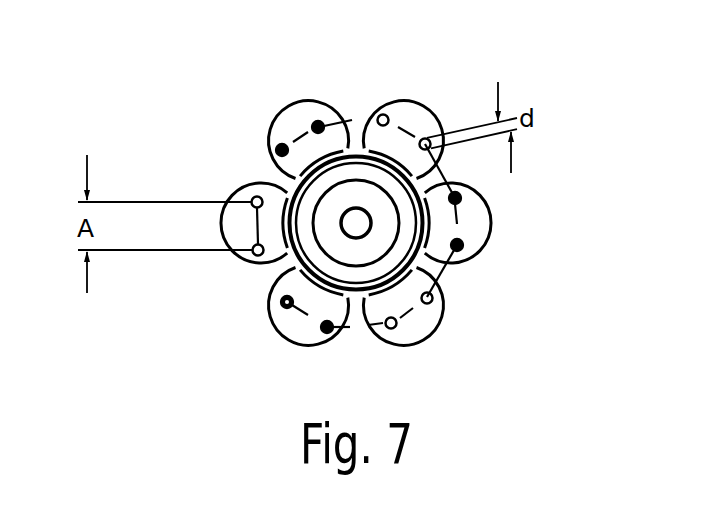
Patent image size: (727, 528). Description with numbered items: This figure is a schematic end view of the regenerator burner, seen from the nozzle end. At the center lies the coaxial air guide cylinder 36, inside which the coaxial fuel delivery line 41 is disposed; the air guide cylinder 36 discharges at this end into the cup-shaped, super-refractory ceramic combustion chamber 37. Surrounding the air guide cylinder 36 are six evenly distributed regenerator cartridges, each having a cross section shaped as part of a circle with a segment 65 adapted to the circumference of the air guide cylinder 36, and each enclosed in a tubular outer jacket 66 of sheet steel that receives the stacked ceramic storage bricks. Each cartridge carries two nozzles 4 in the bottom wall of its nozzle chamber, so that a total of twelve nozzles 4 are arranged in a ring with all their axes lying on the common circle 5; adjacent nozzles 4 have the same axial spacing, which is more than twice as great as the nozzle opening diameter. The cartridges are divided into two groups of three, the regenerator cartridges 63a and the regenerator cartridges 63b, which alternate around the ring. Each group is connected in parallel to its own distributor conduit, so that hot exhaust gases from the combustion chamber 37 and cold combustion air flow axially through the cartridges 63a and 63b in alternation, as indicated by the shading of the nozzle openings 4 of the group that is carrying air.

The nozzles 4 is at (384, 118).
The common circle 5 is at (443, 176).
The air guide cylinder 36 is at (318, 198).
The combustion chamber 37 is at (442, 262).
The fuel delivery line 41 is at (356, 223).
The regenerator cartridges of first group 63a is at (478, 223).
The regenerator cartridges of second group 63b is at (425, 318).
The segment 65 is at (320, 165).
The tubular outer jacket 66 is at (281, 331).